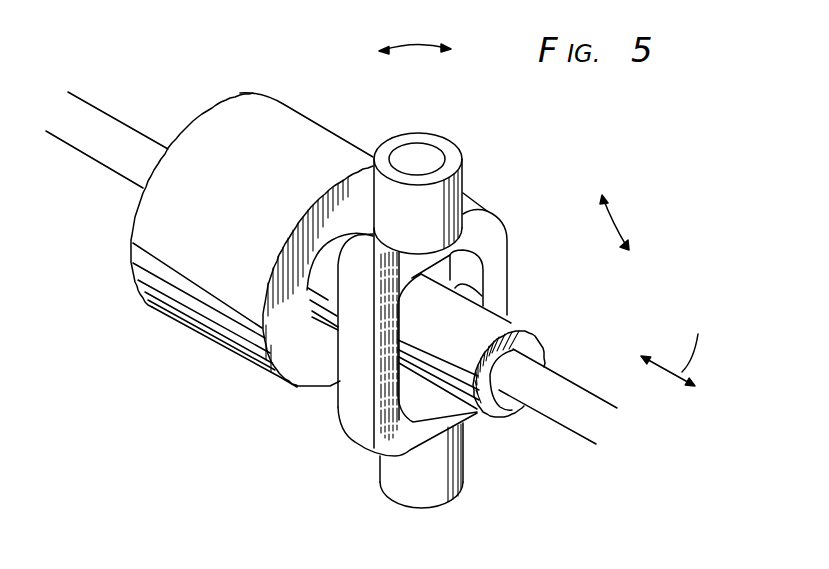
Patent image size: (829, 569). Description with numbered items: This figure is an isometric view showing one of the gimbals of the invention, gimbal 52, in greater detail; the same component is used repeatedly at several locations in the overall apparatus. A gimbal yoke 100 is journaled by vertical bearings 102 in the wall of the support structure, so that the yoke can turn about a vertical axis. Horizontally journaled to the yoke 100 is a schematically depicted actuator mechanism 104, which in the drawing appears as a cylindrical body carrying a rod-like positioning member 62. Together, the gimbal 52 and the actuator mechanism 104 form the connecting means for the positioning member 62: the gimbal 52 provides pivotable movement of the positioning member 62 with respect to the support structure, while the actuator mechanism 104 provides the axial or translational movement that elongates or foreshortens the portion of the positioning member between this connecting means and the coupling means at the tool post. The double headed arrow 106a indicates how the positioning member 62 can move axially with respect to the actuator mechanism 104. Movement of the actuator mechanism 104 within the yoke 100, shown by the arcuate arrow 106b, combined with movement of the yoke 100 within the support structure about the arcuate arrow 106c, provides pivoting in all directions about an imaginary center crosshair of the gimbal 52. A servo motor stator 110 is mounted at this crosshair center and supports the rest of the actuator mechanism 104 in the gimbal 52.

The gimbal 52 is at (350, 418).
The positioning member 62 is at (573, 392).
The gimbal yoke 100 is at (495, 266).
The vertical bearings 102 is at (458, 152).
The actuator mechanism 104 is at (236, 350).
The servo motor stator 110 is at (510, 323).
The double headed arrow 106a is at (669, 350).
The arcuate arrow 106b is at (640, 222).
The arcuate arrow 106c is at (415, 33).